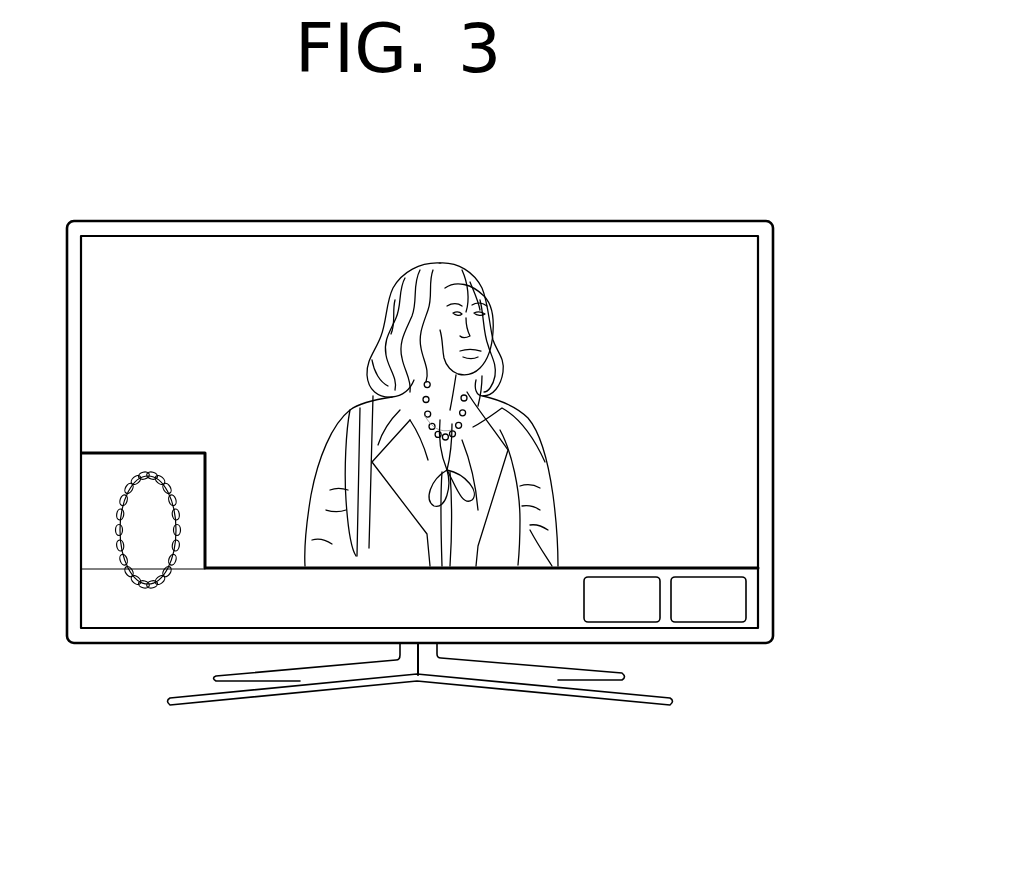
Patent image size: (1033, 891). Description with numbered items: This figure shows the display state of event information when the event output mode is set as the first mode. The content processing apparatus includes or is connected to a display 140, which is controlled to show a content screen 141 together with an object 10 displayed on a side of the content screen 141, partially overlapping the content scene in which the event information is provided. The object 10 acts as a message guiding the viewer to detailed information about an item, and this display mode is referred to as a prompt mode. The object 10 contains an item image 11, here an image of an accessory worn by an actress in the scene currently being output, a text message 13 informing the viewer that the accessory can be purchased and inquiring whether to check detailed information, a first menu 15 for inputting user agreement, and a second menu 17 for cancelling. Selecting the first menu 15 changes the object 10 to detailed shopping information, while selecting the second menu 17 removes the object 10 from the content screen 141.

The object 10 is at (145, 452).
The item image 11 is at (148, 589).
The text message 13 is at (320, 598).
The first menu 15 is at (630, 618).
The second menu 17 is at (715, 618).
The display 140 is at (708, 221).
The content screen 141 is at (629, 237).